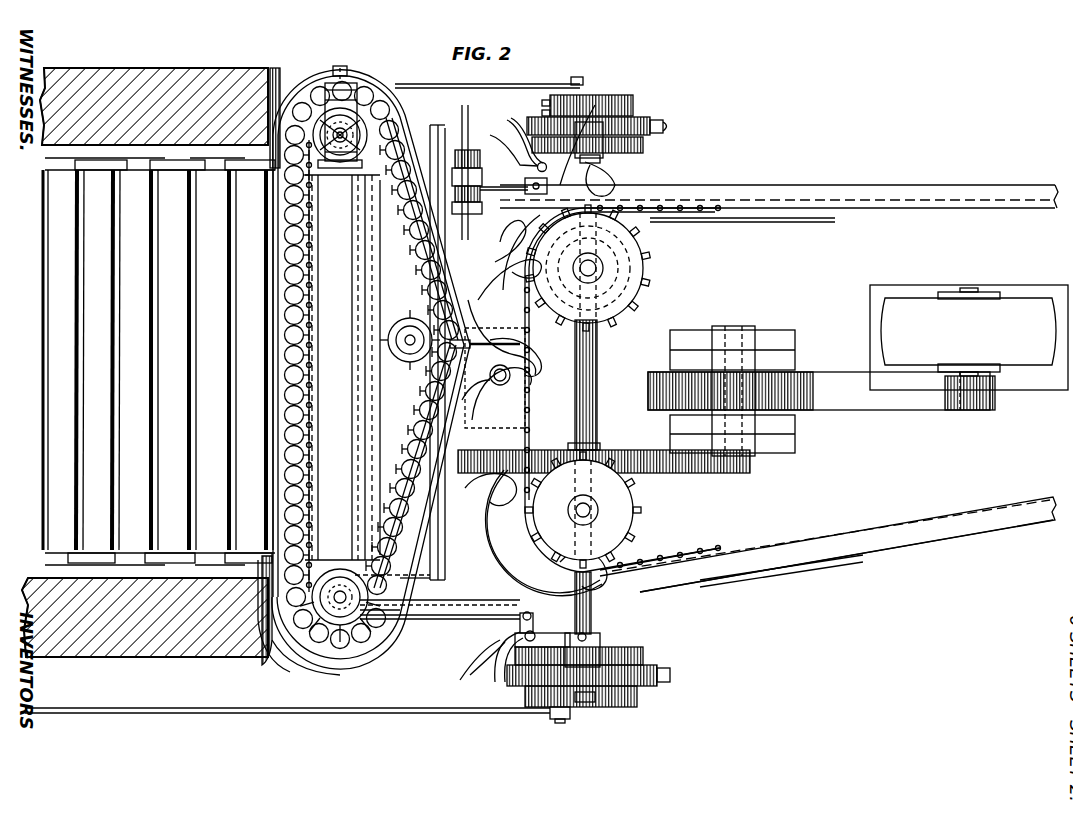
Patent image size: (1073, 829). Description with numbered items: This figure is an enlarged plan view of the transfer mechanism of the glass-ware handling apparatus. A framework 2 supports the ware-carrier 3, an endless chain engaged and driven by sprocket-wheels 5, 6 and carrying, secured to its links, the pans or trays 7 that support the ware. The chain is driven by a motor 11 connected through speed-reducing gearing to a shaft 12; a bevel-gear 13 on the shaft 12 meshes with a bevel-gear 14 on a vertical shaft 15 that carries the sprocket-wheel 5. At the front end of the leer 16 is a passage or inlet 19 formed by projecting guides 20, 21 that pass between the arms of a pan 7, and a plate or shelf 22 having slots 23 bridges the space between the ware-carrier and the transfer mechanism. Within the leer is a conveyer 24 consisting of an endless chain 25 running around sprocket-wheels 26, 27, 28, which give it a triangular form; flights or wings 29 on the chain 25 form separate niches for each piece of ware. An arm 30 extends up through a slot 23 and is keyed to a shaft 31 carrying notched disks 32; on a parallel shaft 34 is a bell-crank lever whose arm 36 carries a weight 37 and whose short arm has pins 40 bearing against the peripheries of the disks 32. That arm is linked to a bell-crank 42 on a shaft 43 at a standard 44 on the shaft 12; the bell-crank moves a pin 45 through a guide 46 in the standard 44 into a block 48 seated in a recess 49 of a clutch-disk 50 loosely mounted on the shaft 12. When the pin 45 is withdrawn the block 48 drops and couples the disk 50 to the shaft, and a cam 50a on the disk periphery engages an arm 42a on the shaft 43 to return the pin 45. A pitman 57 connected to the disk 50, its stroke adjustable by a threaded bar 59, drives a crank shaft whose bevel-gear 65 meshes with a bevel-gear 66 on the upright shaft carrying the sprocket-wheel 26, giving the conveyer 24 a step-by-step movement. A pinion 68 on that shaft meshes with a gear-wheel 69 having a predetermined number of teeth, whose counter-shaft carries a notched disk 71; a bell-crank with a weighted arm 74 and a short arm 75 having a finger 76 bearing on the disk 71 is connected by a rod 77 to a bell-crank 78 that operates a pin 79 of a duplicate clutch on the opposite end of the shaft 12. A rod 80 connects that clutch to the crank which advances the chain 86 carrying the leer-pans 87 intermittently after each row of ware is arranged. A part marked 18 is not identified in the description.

The framework 2 is at (900, 196).
The ware-carrier 3 is at (712, 212).
The sprocket-wheel 5 is at (648, 262).
The sprocket-wheel 6 is at (636, 500).
The pan 7 is at (592, 576).
The motor 11 is at (858, 370).
The shaft 12 is at (597, 420).
The bevel-gear 13 is at (642, 240).
The bevel-gear 14 is at (640, 298).
The vertical shaft 15 is at (598, 270).
The leer 16 is at (170, 90).
The sprocket wheel 18 is at (360, 72).
The passage or inlet 19 is at (604, 446).
The projecting guide 20 is at (525, 354).
The projecting guide 21 is at (512, 377).
The plate or shelf 22 is at (500, 248).
The slot 23 is at (510, 333).
The conveyer 24 is at (305, 372).
The endless chain 25 is at (430, 422).
The sprocket-wheel 26 is at (318, 95).
The sprocket-wheel 27 is at (372, 617).
The sprocket-wheel 28 is at (388, 339).
The flights or wings 29 is at (386, 97).
The arm 30 is at (487, 358).
The shaft 31 is at (469, 238).
The disk 32 is at (433, 340).
The shaft 34 is at (470, 150).
The arm 36 is at (521, 246).
The weight 37 is at (544, 196).
The pin 40 is at (480, 176).
The bell-crank 42 is at (587, 123).
The arm 42a is at (430, 675).
The shaft 43 is at (513, 147).
The standard 44 is at (632, 155).
The pin 45 is at (600, 168).
The guide 46 is at (612, 136).
The block 48 is at (605, 120).
The recess 49 is at (572, 710).
The clutch-disk 50 is at (670, 125).
The cam 50a is at (705, 690).
The pitman 57 is at (550, 86).
The threaded bar 59 is at (625, 118).
The bevel-gear 65 is at (398, 100).
The bevel-gear 66 is at (264, 95).
The pinion 68 is at (235, 645).
The gear-wheel 69 is at (432, 577).
The disk 71 is at (300, 655).
The weighted arm 74 is at (268, 650).
The short arm 75 is at (400, 620).
The finger 76 is at (405, 606).
The rod 77 is at (480, 620).
The bell-crank 78 is at (562, 637).
The pin 79 is at (590, 637).
The rod 80 is at (340, 714).
The chain 86 is at (115, 168).
The leer-pan 87 is at (62, 289).